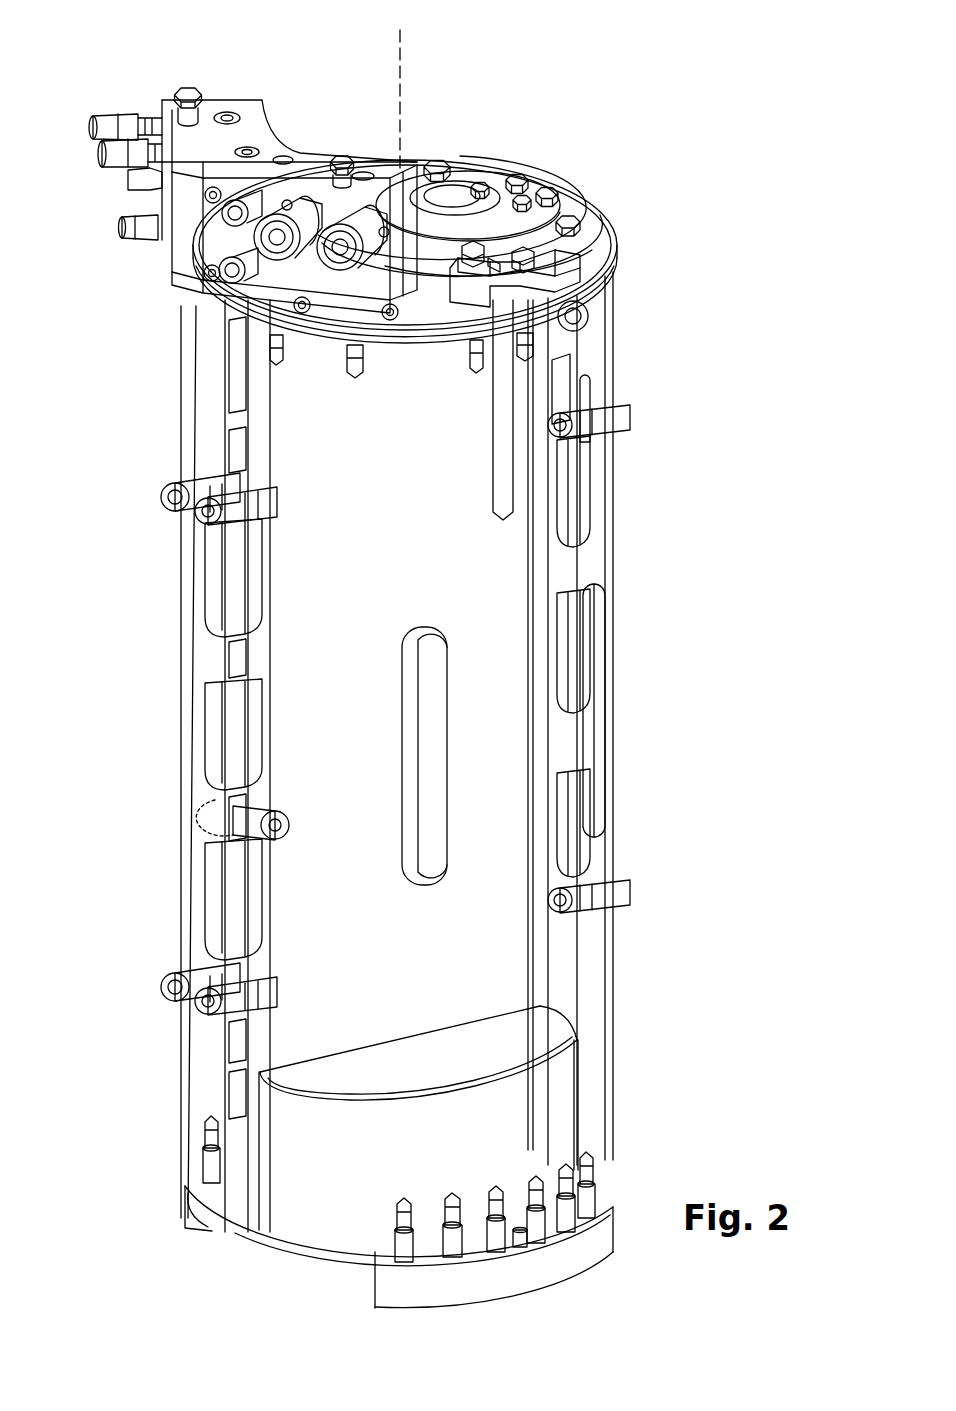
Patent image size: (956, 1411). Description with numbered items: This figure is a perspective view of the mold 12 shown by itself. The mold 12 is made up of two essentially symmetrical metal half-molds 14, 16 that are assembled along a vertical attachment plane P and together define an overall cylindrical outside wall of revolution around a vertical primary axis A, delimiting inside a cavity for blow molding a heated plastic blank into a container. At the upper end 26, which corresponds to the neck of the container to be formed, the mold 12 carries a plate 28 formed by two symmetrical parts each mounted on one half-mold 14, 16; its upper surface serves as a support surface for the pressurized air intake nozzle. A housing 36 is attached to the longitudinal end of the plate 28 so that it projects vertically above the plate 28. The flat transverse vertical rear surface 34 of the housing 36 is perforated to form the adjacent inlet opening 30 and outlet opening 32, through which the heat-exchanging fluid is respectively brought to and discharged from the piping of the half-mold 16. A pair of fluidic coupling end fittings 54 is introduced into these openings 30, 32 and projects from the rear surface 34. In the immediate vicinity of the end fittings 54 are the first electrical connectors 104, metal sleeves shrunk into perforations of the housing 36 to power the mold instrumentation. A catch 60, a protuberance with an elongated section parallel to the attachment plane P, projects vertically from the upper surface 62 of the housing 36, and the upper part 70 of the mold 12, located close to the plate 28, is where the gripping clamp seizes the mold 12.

The mold 12 is at (640, 528).
The half-mold 14 is at (178, 643).
The half-mold 16 is at (480, 712).
The upper end 26 is at (198, 322).
The plate 28 is at (442, 192).
The inlet opening 30 is at (340, 249).
The outlet opening 32 is at (277, 239).
The rear surface 34 is at (337, 205).
The housing 36 is at (384, 176).
The fluidic coupling end fitting 54 is at (283, 200).
The catch 60 is at (347, 166).
The upper surface 62 is at (300, 178).
The upper part for gripping 70 is at (537, 280).
The first electrical connector 104 is at (218, 218).
The attachment plane P is at (500, 227).
The primary axis A is at (435, 86).